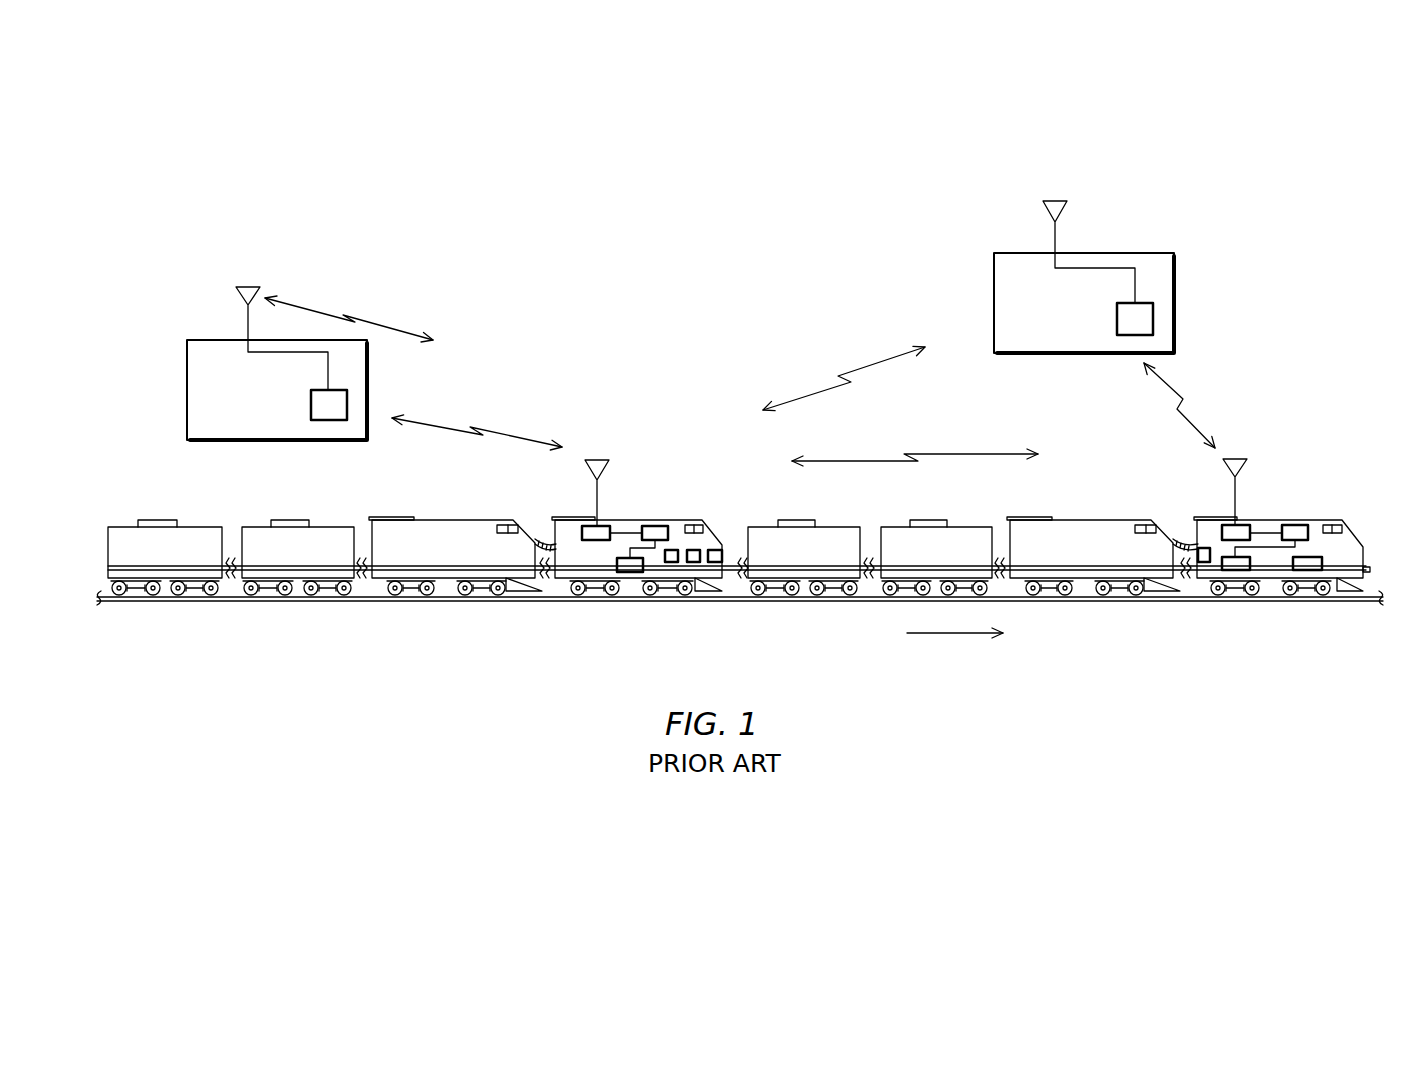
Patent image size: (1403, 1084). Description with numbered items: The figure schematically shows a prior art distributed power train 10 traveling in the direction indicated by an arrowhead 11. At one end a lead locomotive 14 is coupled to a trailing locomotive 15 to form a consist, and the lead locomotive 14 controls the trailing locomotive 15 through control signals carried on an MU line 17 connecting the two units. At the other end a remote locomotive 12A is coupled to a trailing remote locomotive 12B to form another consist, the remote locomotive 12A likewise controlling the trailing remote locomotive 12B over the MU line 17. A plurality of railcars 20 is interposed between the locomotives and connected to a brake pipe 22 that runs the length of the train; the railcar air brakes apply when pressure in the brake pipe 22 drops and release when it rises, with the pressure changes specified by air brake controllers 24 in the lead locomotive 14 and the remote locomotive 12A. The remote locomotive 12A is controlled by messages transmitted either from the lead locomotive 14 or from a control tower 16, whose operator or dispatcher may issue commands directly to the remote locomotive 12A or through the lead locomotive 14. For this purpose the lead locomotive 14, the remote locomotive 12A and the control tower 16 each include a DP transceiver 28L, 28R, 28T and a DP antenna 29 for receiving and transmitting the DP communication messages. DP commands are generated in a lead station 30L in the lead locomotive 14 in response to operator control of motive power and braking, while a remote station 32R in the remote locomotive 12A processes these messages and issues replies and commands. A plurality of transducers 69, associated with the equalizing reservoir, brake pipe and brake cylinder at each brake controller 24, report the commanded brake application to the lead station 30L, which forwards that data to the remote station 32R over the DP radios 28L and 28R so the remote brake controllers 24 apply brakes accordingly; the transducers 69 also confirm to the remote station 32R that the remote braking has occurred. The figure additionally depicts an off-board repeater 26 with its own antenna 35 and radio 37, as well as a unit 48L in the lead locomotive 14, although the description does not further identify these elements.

The distributed power train 10 is at (612, 322).
The arrowhead 11 is at (953, 634).
The remote locomotive 12A is at (627, 520).
The trailing remote locomotive 12B is at (443, 520).
The lead locomotive 14 is at (1267, 520).
The trailing locomotive 15 is at (1078, 518).
The control tower 16 is at (994, 300).
The MU line 17 is at (545, 540).
The railcars 20 is at (285, 520).
The brake pipe 22 is at (448, 568).
The air brake controllers 24 is at (631, 572).
The off-board repeater 26 is at (187, 386).
The DP transceiver 28L is at (1225, 526).
The DP transceiver 28R is at (584, 527).
The DP transceiver 28T is at (1153, 315).
The DP antenna 29 is at (597, 460).
The lead station 30L is at (1295, 526).
The remote station 32R is at (655, 526).
The repeater antenna 35 is at (240, 297).
The repeater radio 37 is at (347, 400).
The sensor unit 48L is at (1327, 571).
The transducers 69 is at (712, 562).